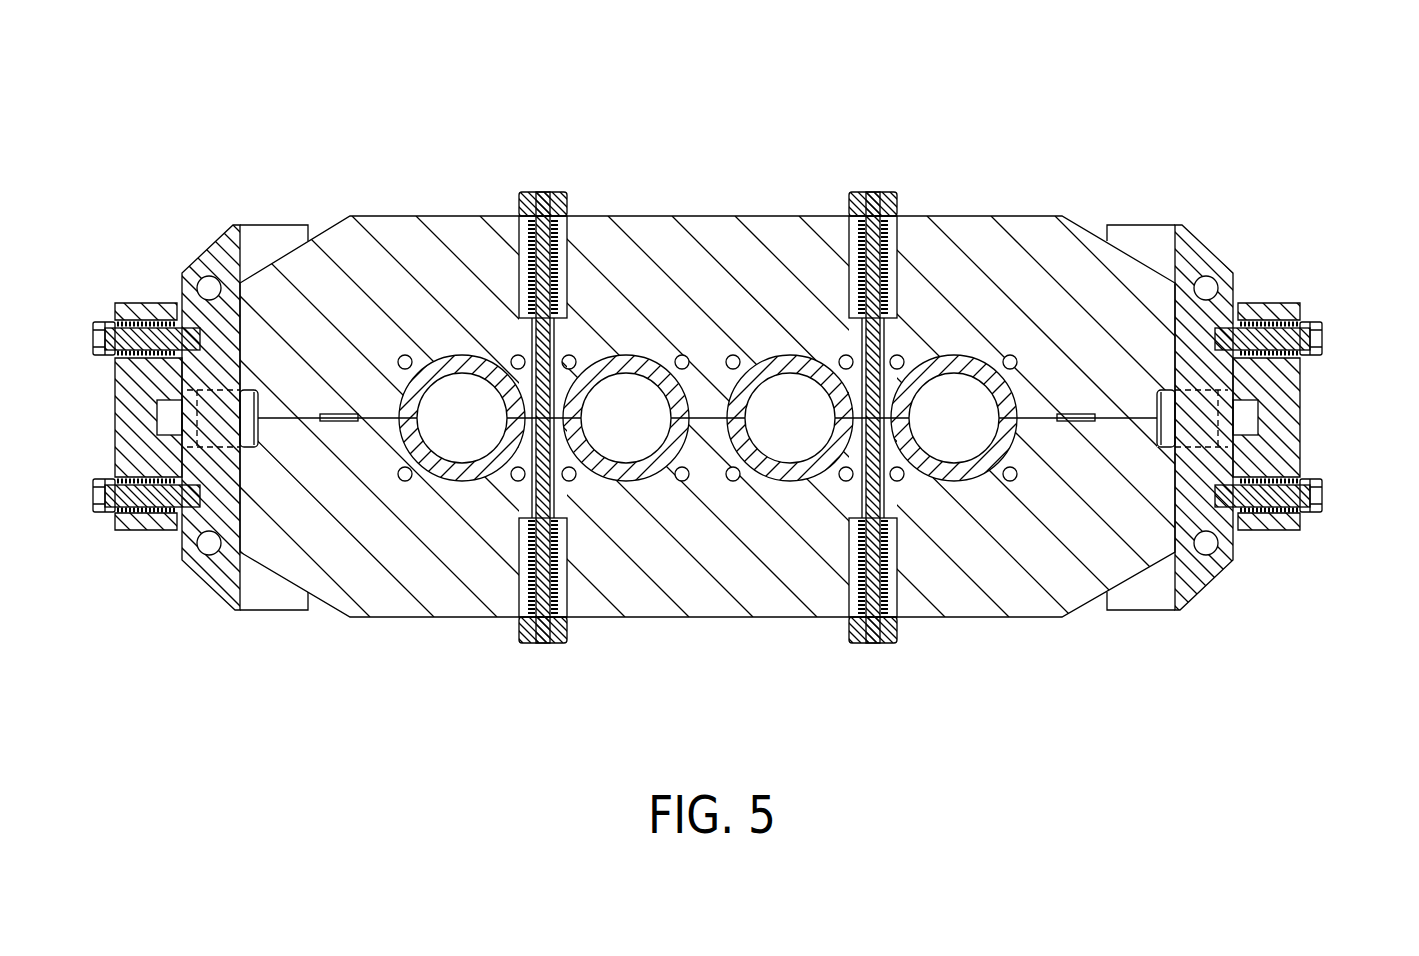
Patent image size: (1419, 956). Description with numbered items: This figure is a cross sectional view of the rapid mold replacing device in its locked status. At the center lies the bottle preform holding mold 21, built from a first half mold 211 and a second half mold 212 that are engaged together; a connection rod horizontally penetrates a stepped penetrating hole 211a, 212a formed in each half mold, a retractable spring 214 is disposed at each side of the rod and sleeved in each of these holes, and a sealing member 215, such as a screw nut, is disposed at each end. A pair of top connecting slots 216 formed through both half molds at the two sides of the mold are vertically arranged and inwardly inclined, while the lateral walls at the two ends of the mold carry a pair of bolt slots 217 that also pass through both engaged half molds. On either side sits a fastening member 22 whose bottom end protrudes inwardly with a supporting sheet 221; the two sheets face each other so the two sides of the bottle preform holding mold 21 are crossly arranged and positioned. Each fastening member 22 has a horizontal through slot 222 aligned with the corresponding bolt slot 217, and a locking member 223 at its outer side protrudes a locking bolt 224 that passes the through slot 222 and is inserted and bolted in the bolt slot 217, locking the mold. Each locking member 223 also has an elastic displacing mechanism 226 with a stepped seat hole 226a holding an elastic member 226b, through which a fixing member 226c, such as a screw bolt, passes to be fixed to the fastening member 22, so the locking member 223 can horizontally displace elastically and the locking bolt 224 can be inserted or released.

The bottle preform holding mold 21 is at (709, 401).
The first half mold 211 is at (998, 587).
The stepped penetrating hole 211a is at (845, 570).
The second half mold 212 is at (1005, 250).
The stepped penetrating hole 212a is at (845, 252).
The retractable spring 214 is at (925, 250).
The sealing member 215 is at (897, 250).
The top connecting slot 216 is at (1070, 423).
The bolt slot 217 is at (1163, 400).
The fastening member 22 is at (709, 396).
The supporting sheet 221 is at (265, 598).
The through slot 222 is at (1207, 447).
The locking member 223 is at (709, 333).
The locking bolt 224 is at (1160, 395).
The elastic displacing mechanism 226 is at (709, 364).
The stepped seat hole 226a is at (1285, 320).
The elastic member 226b is at (1272, 323).
The fixing member 226c is at (1318, 328).